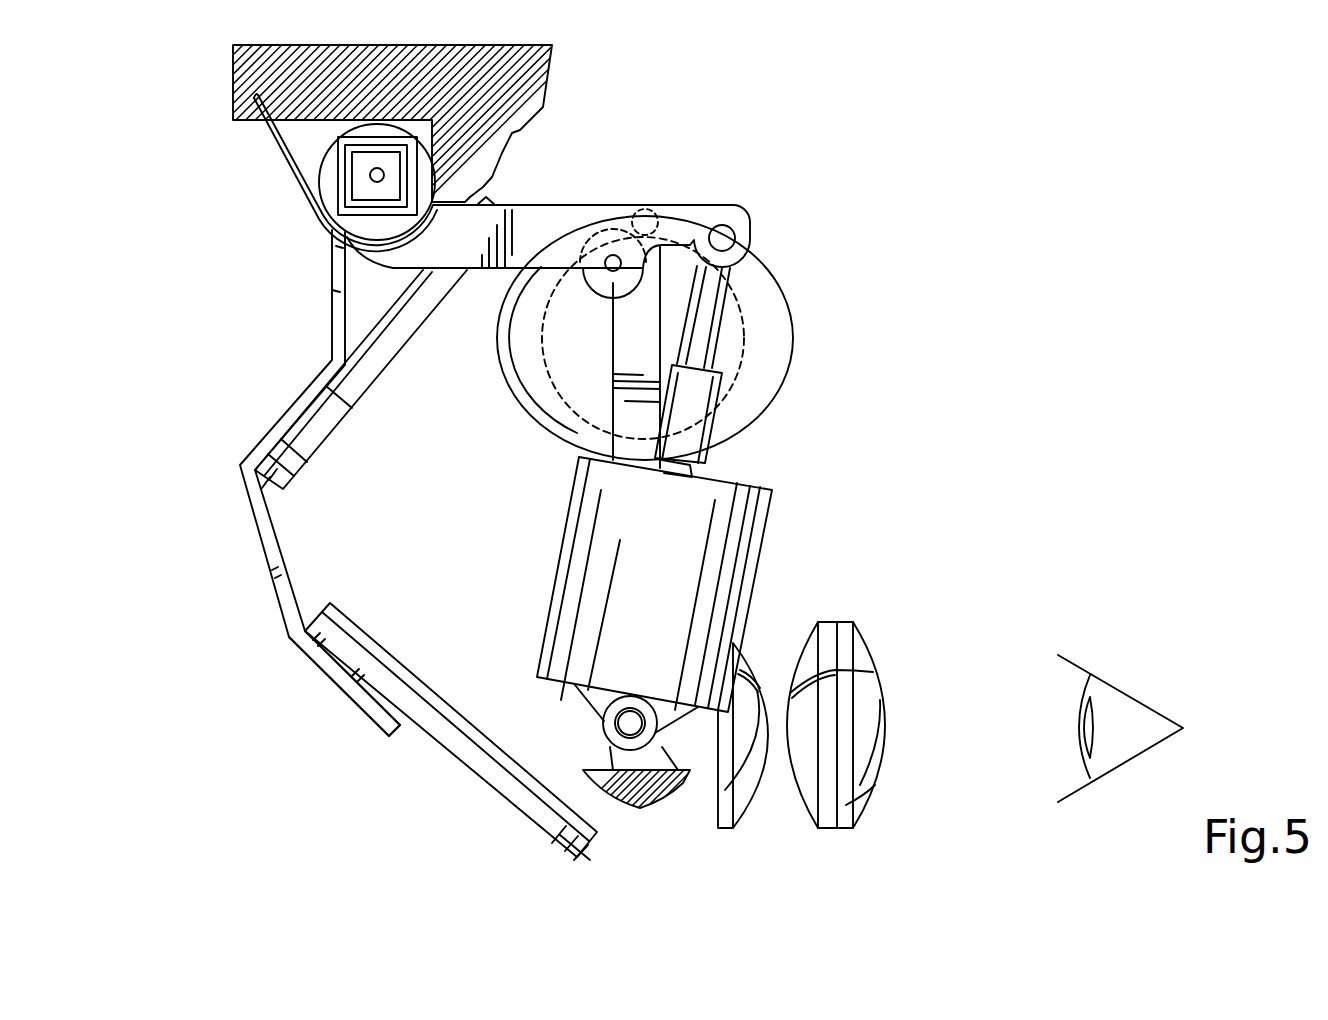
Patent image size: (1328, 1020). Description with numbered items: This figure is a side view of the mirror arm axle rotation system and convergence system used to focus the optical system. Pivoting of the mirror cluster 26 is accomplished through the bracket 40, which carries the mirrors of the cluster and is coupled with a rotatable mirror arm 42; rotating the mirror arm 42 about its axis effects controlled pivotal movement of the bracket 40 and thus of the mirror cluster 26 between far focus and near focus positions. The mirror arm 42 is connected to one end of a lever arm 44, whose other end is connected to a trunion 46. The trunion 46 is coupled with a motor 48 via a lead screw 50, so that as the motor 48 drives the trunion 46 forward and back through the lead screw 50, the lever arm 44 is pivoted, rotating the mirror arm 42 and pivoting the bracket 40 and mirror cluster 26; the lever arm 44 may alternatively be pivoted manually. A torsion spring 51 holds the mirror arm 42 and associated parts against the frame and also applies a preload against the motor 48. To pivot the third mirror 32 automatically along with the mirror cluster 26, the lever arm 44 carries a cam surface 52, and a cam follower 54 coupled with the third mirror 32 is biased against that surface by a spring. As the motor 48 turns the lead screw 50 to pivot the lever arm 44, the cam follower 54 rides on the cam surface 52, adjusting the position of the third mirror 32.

The mirror cluster 26 is at (215, 652).
The third mirror 32 is at (543, 393).
The bracket 40 is at (330, 287).
The mirror arm 42 is at (370, 174).
The lever arm 44 is at (577, 223).
The trunion 46 is at (750, 256).
The motor 48 is at (698, 530).
The lead screw 50 is at (707, 315).
The torsion spring 51 is at (318, 200).
The cam surface 52 is at (640, 200).
The cam follower 54 is at (613, 283).